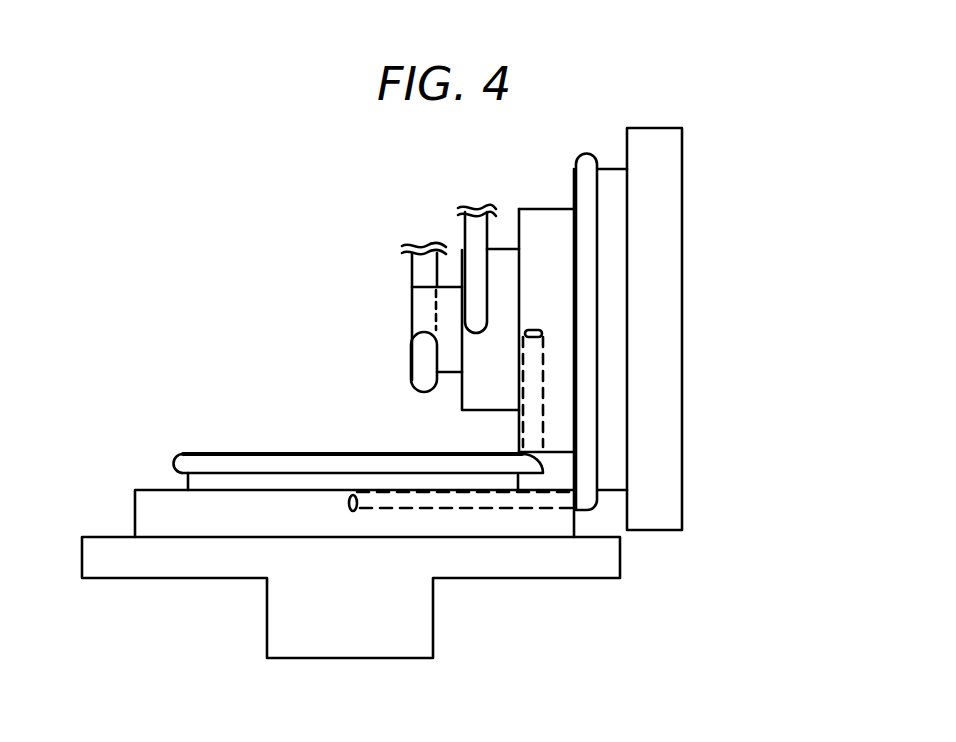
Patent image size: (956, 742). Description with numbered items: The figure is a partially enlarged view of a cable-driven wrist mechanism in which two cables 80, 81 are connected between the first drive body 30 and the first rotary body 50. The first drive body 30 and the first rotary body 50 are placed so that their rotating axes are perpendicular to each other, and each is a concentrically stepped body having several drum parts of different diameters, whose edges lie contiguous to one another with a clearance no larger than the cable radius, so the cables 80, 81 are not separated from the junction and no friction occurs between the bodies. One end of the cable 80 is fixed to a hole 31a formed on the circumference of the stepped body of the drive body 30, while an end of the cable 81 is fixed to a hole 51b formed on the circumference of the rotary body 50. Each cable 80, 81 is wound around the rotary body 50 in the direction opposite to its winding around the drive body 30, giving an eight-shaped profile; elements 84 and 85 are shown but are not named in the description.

The first drive body 30 is at (418, 598).
The hole 31a is at (349, 504).
The first rotary body 50 is at (660, 373).
The hole 51b is at (542, 333).
The cable 80 is at (585, 456).
The cable 81 is at (388, 468).
The rod 84 is at (477, 239).
The rod 85 is at (420, 368).